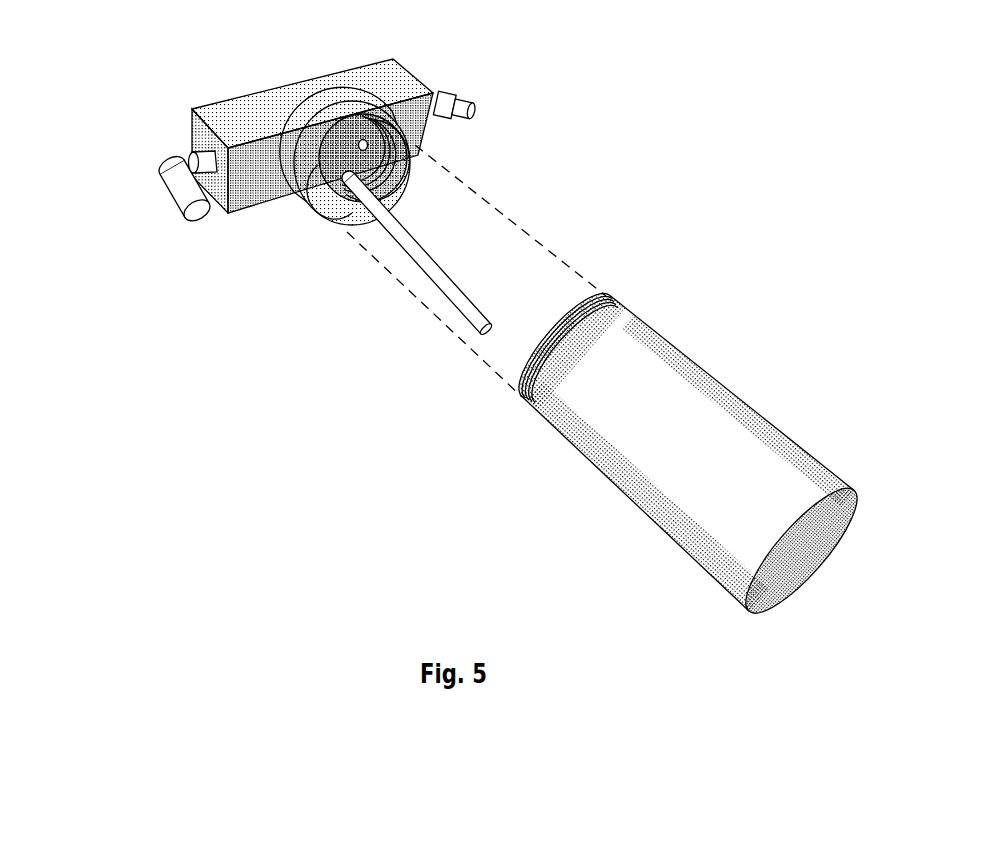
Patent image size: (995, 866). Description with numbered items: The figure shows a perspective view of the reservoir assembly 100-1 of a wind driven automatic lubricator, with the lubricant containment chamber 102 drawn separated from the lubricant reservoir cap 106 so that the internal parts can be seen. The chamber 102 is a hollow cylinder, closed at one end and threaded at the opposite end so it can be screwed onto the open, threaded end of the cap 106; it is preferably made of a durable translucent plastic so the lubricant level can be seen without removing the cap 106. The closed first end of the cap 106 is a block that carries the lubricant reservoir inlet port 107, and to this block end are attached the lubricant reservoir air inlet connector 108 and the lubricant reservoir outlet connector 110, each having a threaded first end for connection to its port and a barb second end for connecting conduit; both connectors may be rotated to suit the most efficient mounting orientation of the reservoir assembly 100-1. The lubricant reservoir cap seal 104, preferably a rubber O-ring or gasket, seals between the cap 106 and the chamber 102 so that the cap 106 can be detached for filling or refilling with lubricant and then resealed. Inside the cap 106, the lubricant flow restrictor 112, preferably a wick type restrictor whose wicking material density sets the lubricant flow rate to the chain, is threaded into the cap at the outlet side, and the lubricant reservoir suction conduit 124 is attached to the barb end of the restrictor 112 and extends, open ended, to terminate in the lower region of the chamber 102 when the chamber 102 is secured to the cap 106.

The reservoir assembly 100-1 is at (254, 432).
The lubricant containment chamber 102 is at (684, 438).
The lubricant reservoir cap seal 104 is at (458, 156).
The lubricant reservoir cap 106 is at (310, 126).
The lubricant reservoir inlet port 107 is at (471, 123).
The lubricant reservoir air inlet connector 108 is at (494, 85).
The lubricant reservoir outlet connector 110 is at (139, 165).
The lubricant flow restrictor 112 is at (274, 246).
The lubricant reservoir suction conduit 124 is at (416, 283).